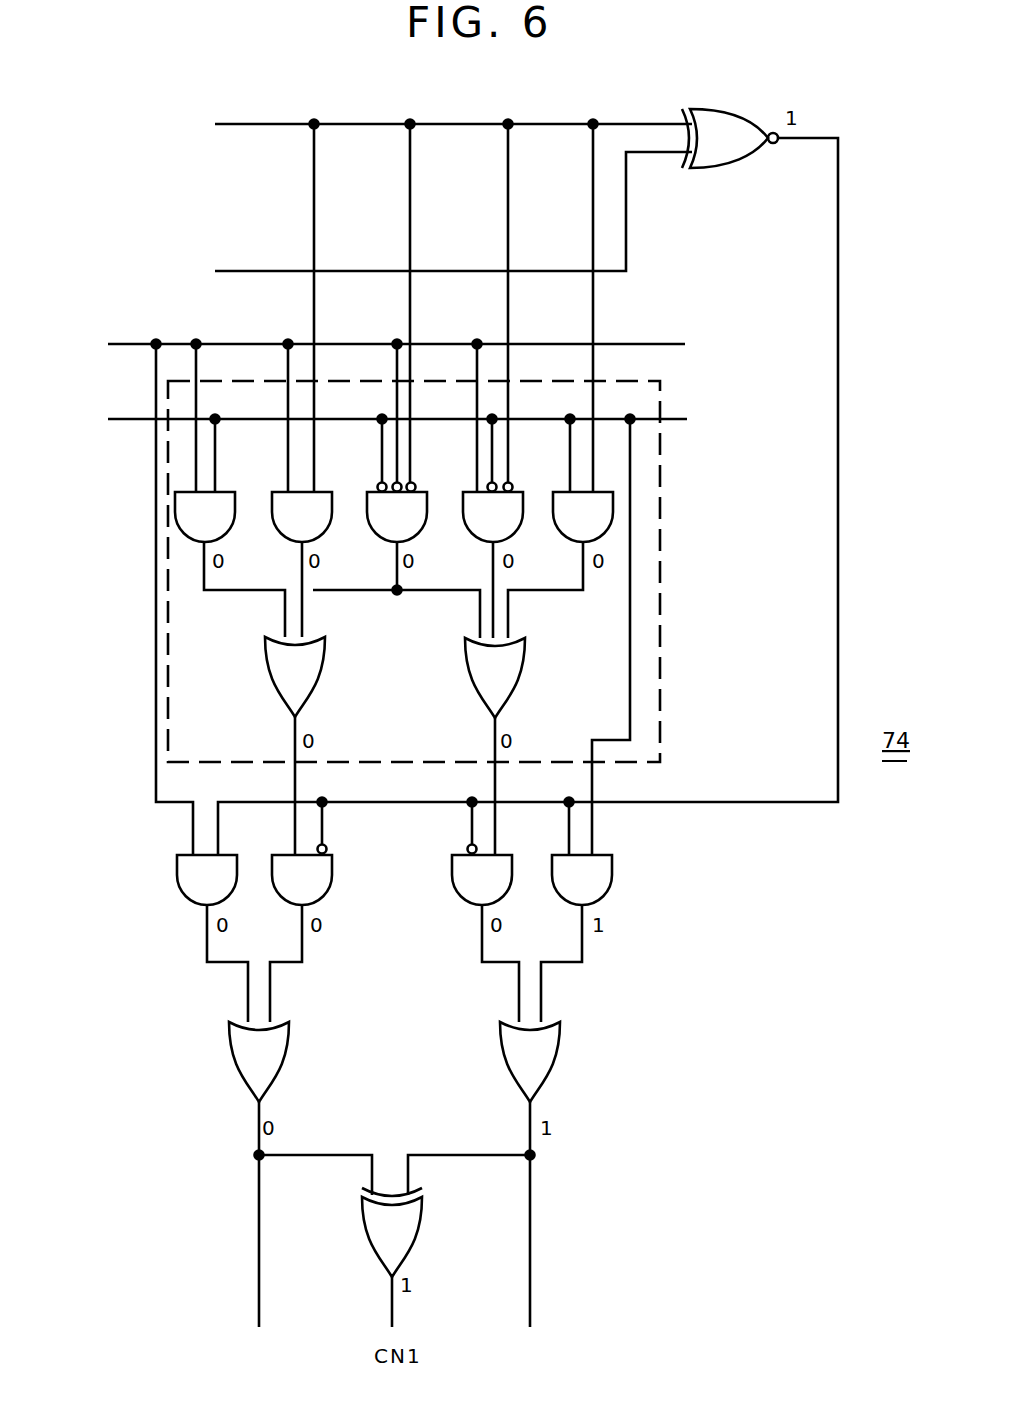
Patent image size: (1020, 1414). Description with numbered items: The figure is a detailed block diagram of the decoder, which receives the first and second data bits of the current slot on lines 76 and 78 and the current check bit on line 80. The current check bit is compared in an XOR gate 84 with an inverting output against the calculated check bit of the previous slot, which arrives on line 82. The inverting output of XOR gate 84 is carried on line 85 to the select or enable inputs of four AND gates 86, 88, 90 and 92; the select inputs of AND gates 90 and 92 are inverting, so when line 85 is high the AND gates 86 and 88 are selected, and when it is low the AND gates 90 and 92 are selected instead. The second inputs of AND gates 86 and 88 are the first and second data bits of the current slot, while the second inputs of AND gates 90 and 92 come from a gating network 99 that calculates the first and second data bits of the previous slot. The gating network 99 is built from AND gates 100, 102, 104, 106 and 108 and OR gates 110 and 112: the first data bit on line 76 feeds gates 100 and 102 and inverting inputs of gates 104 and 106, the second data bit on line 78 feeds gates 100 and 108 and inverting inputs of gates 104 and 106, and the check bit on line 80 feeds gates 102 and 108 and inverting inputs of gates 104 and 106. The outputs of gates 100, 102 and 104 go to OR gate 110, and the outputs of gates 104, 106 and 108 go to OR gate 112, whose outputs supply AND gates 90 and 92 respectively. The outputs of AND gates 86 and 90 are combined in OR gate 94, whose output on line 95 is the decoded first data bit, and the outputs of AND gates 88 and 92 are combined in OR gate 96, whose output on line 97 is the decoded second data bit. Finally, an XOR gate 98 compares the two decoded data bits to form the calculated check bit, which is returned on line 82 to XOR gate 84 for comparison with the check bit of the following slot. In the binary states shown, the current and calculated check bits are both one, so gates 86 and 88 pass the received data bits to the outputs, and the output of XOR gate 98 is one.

The line 76 is at (172, 344).
The line 78 is at (140, 424).
The line 80 is at (349, 123).
The line 82 is at (342, 270).
The XOR gate 84 is at (730, 138).
The line 85 is at (836, 311).
The AND gate 86 is at (207, 880).
The AND gate 88 is at (582, 880).
The AND gate 90 is at (302, 880).
The AND gate 92 is at (482, 880).
The OR gate 94 is at (259, 1062).
The line 95 is at (258, 1212).
The OR gate 96 is at (530, 1062).
The line 97 is at (532, 1210).
The XOR gate 98 is at (392, 1232).
The gating network 99 is at (662, 567).
The AND gate 100 is at (205, 517).
The AND gate 102 is at (302, 517).
The AND gate 104 is at (397, 517).
The AND gate 106 is at (493, 517).
The AND gate 108 is at (583, 517).
The OR gate 110 is at (295, 677).
The OR gate 112 is at (495, 678).